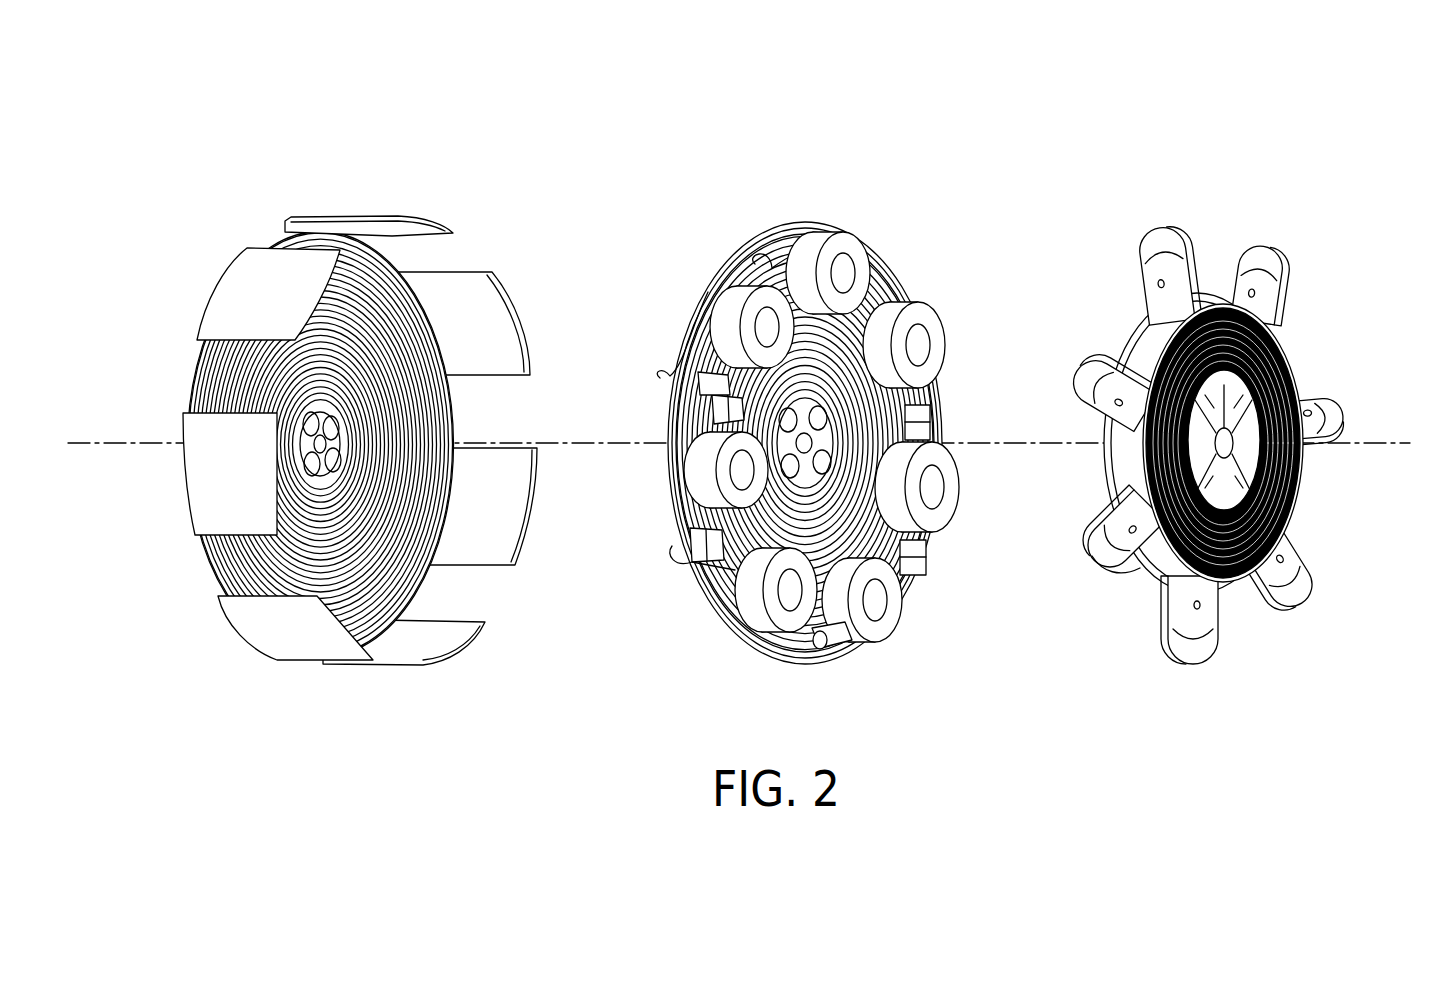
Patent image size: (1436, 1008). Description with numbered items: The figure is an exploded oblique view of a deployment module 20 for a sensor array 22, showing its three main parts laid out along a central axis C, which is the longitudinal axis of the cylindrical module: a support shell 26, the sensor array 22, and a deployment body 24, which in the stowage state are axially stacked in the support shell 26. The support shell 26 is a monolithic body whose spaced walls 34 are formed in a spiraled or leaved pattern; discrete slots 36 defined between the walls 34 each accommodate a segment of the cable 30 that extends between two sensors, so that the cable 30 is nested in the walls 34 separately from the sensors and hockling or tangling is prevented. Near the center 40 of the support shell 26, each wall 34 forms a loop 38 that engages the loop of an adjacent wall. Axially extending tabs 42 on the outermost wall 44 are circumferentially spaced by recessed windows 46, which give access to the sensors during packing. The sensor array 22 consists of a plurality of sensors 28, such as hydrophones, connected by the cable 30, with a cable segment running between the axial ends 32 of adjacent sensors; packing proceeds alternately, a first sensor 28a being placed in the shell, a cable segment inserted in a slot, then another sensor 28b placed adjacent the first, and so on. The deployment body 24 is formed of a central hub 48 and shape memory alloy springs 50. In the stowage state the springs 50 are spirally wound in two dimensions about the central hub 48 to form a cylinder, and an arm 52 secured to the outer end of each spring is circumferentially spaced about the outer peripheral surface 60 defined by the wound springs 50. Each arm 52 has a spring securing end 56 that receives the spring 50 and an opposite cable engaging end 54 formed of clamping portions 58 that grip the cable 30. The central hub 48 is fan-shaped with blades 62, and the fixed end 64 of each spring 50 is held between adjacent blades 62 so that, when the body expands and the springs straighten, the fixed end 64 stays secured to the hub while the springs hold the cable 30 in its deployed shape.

The deployment module 20 is at (288, 192).
The sensor array 22 is at (736, 300).
The deployment body 24 is at (1296, 352).
The support shell 26 is at (227, 502).
The sensors 28 is at (843, 255).
The first sensor 28a is at (916, 322).
The another sensor 28b is at (930, 456).
The cable 30 is at (792, 662).
The axial ends 32 is at (836, 637).
The walls 34 is at (420, 588).
The discrete slots 36 is at (283, 553).
The loop 38 is at (282, 448).
The center 40 is at (280, 443).
The axially extending tabs 42 is at (462, 290).
The outermost wall 44 is at (280, 236).
The recessed windows 46 is at (446, 606).
The central hub 48 is at (1299, 492).
The springs 50 is at (1298, 520).
The arm 52 is at (1285, 587).
The cable engaging end 54 is at (1195, 624).
The spring securing end 56 is at (1085, 520).
The clamping portions 58 is at (1103, 568).
The outer peripheral surface 60 is at (1143, 340).
The blades 62 is at (1300, 390).
The fixed end 64 is at (1303, 447).
The central axis C is at (128, 440).